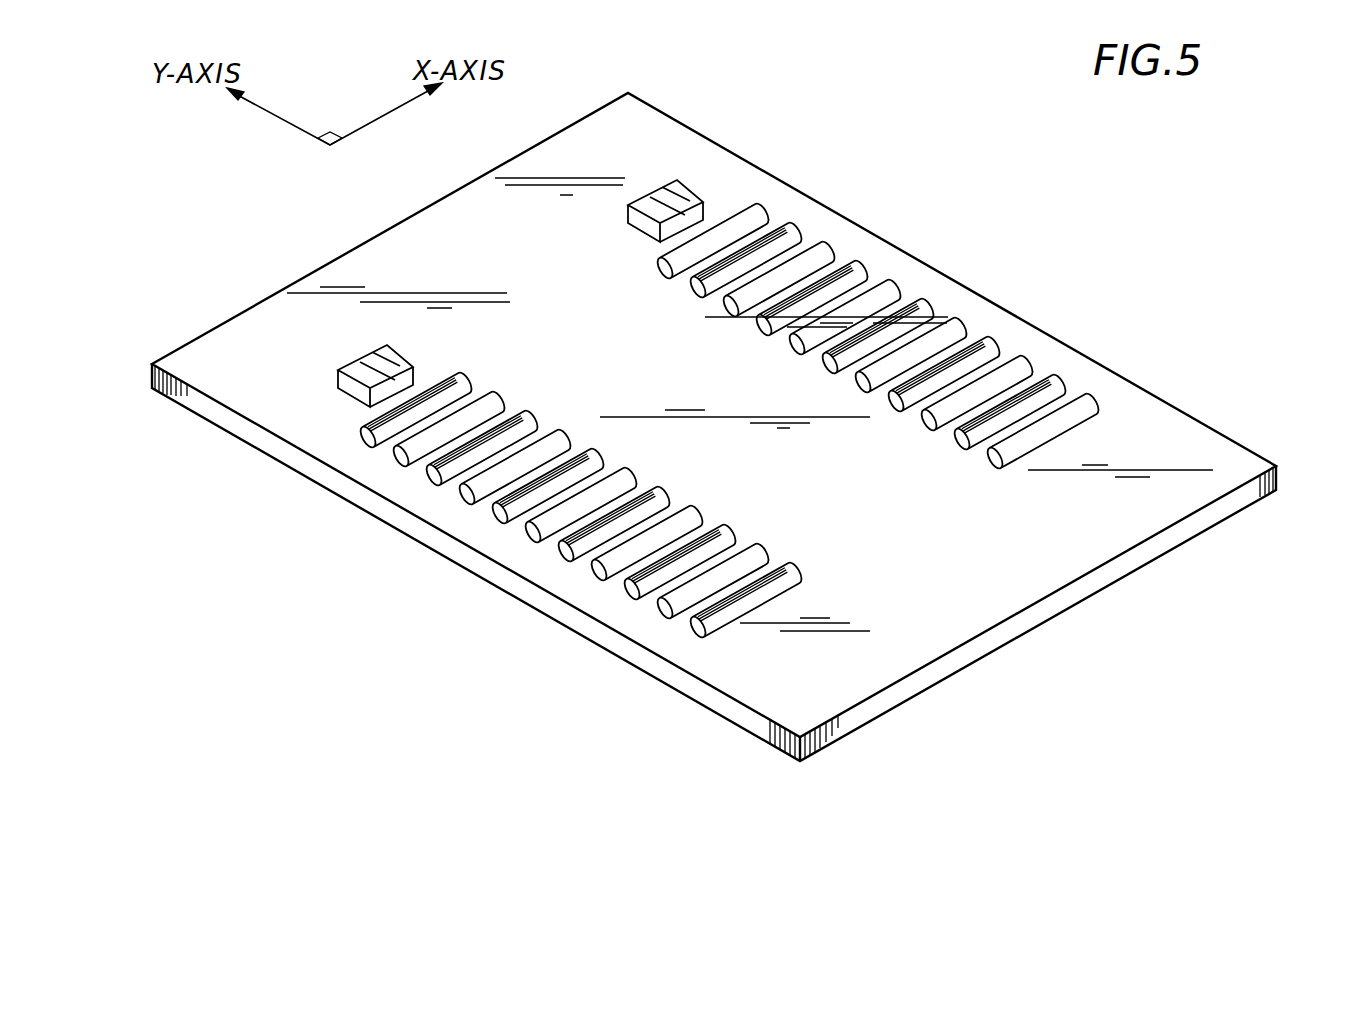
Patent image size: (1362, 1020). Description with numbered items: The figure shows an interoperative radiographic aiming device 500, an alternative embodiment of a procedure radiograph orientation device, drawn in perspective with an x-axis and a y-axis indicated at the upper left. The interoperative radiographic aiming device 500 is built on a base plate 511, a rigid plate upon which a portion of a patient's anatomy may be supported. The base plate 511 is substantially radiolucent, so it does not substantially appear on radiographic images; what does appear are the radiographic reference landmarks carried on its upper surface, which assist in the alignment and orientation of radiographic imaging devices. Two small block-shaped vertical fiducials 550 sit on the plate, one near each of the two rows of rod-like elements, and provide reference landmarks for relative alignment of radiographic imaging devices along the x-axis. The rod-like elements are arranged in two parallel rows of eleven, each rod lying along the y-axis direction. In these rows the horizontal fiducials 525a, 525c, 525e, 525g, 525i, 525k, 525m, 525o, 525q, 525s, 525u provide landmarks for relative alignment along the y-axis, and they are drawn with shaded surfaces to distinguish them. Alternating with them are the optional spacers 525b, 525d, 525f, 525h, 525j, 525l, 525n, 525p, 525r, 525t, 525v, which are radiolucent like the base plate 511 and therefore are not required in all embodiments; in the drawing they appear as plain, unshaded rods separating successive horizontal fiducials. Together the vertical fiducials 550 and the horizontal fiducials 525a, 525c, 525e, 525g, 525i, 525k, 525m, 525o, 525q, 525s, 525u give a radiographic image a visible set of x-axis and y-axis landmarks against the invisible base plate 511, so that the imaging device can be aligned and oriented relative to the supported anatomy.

The interoperative radiographic aiming device 500 is at (945, 111).
The base plate 511 is at (432, 204).
The vertical fiducials 550 is at (338, 370).
The horizontal fiducial 525a is at (362, 443).
The spacer 525b is at (395, 461).
The horizontal fiducial 525c is at (428, 481).
The spacer 525d is at (461, 499).
The horizontal fiducial 525e is at (494, 519).
The spacer 525f is at (527, 537).
The horizontal fiducial 525g is at (560, 557).
The spacer 525h is at (593, 575).
The horizontal fiducial 525i is at (626, 595).
The spacer 525j is at (659, 613).
The horizontal fiducial 525k is at (692, 633).
The spacer 525l is at (758, 210).
The horizontal fiducial 525m is at (791, 229).
The spacer 525n is at (824, 248).
The horizontal fiducial 525o is at (857, 267).
The spacer 525p is at (890, 286).
The horizontal fiducial 525q is at (923, 305).
The spacer 525r is at (956, 324).
The horizontal fiducial 525s is at (989, 343).
The spacer 525t is at (1022, 362).
The horizontal fiducial 525u is at (1055, 381).
The spacer 525v is at (1088, 400).